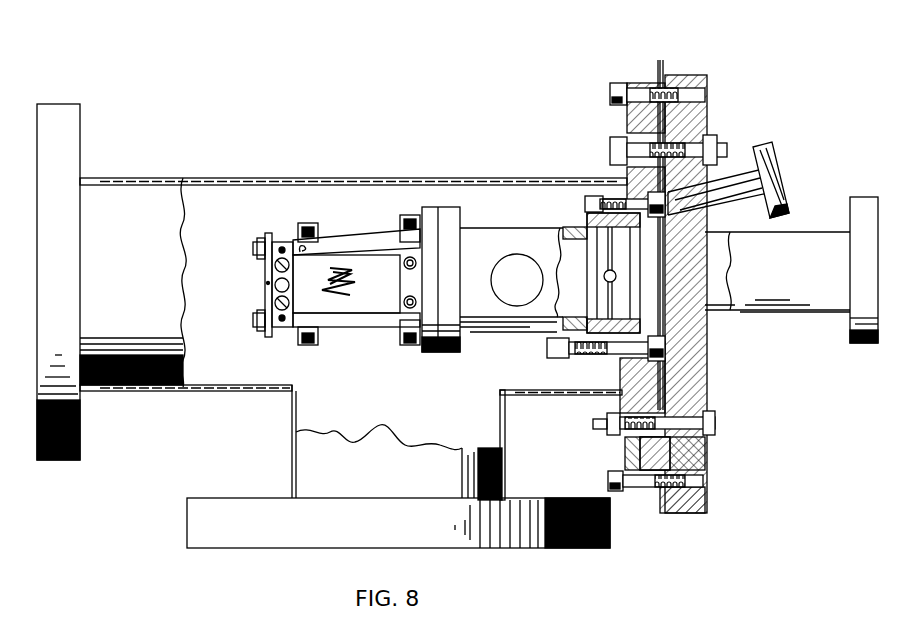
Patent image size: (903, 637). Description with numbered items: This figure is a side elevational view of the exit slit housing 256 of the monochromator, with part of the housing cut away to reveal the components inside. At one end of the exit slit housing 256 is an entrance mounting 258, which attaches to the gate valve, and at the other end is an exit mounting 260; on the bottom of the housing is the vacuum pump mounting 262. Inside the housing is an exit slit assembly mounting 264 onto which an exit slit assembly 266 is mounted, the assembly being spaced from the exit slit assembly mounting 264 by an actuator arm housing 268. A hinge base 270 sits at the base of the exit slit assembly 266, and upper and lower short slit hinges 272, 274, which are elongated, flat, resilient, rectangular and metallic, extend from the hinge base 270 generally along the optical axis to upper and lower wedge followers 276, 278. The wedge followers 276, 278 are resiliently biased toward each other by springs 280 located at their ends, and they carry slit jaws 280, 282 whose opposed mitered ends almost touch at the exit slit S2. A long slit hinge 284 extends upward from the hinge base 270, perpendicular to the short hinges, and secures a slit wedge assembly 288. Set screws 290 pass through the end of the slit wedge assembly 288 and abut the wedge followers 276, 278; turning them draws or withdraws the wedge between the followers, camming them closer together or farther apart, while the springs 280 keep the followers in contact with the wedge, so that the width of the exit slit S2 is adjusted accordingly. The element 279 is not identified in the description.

The exit slit housing 256 is at (340, 178).
The entrance mounting 258 is at (70, 121).
The exit mounting 260 is at (858, 197).
The vacuum pump mounting 262 is at (612, 530).
The exit slit assembly mounting 264 is at (675, 78).
The exit slit assembly 266 is at (406, 389).
The actuator arm housing 268 is at (510, 333).
The hinge base 270 is at (432, 210).
The upper short slit hinge 272 is at (368, 240).
The lower short slit hinge 274 is at (380, 328).
The upper wedge follower 276 is at (290, 243).
The lower wedge follower 278 is at (298, 330).
The lead wire 279 is at (306, 249).
The spring 280 is at (265, 235).
The slit jaw 282 is at (266, 338).
The long slit hinge 284 is at (337, 305).
The slit wedge assembly 288 is at (272, 291).
The set screw 290 is at (280, 246).
The exit slit S2 is at (261, 283).